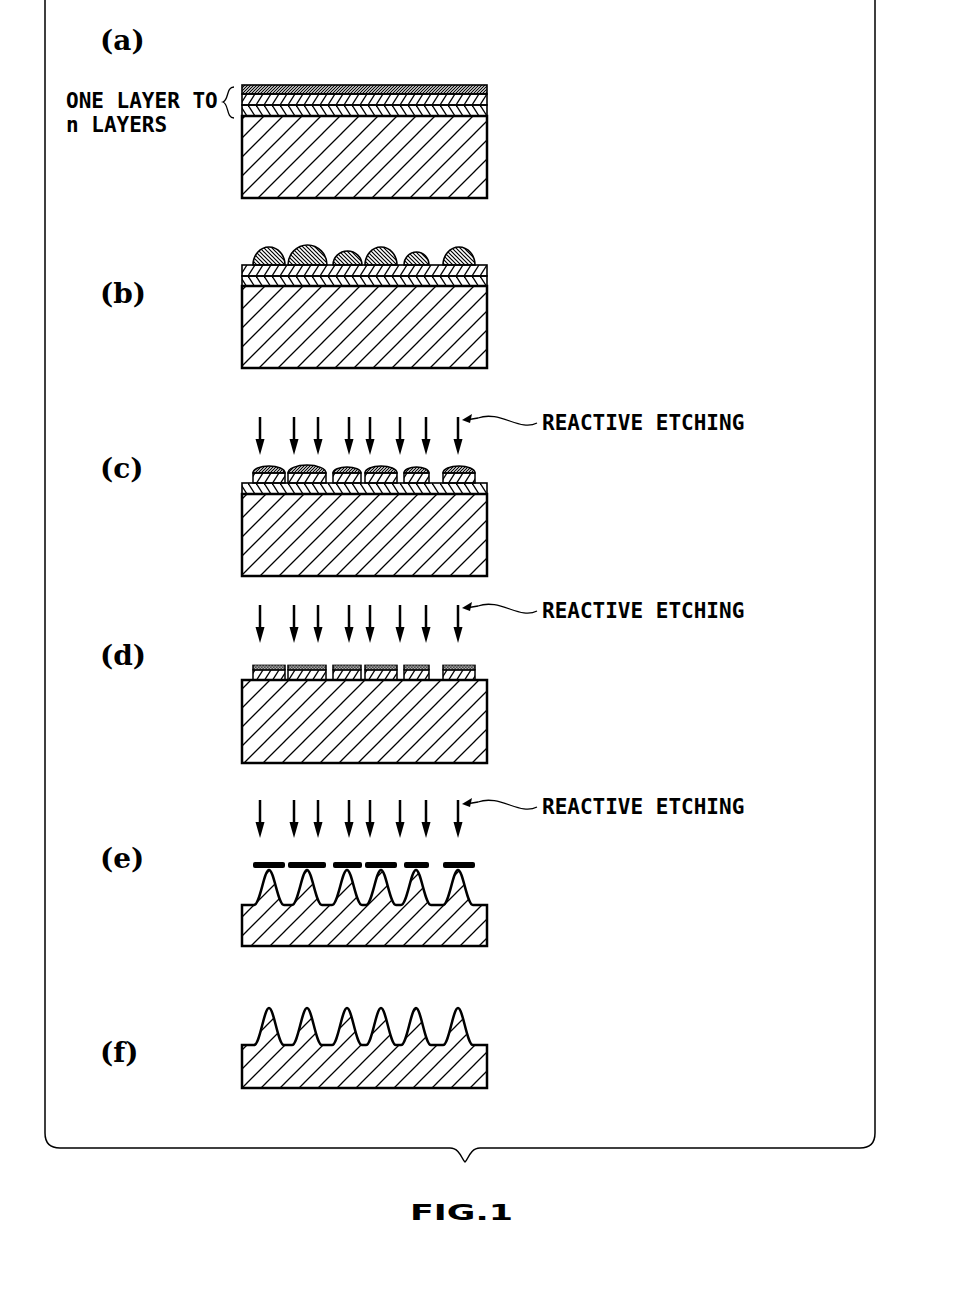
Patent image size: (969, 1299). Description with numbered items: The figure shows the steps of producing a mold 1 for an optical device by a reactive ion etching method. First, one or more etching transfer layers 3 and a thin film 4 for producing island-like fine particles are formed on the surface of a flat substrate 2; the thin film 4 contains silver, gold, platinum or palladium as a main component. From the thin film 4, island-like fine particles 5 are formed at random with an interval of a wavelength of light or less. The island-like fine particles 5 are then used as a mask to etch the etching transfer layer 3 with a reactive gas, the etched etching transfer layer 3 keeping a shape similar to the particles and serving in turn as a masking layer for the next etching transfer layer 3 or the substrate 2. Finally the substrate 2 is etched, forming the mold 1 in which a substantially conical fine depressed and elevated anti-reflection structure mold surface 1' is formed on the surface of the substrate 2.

The thin film 4 is at (441, 85).
The etching transfer layer 3 is at (487, 92).
The substrate 2 is at (487, 162).
The island-like fine particle 5 is at (470, 250).
The anti-reflection structure mold surface 1' is at (537, 908).
The mold for an optical device 1 is at (393, 1048).